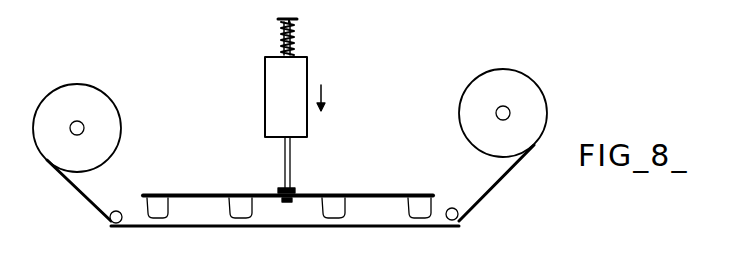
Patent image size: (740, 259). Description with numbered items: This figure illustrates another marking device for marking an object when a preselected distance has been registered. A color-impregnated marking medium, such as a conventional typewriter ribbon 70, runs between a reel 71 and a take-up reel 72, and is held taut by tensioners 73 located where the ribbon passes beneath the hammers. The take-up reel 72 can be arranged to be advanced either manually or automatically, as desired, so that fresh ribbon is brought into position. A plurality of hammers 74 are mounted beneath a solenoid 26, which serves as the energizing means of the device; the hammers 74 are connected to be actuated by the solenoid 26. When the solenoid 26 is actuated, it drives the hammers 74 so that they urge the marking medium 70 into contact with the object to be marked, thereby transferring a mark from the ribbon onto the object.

The solenoid 26 is at (265, 87).
The typewriter ribbon 70 is at (479, 200).
The reel 71 is at (487, 70).
The take-up reel 72 is at (73, 83).
The tensioners 73 is at (116, 210).
The hammers 74 is at (221, 199).